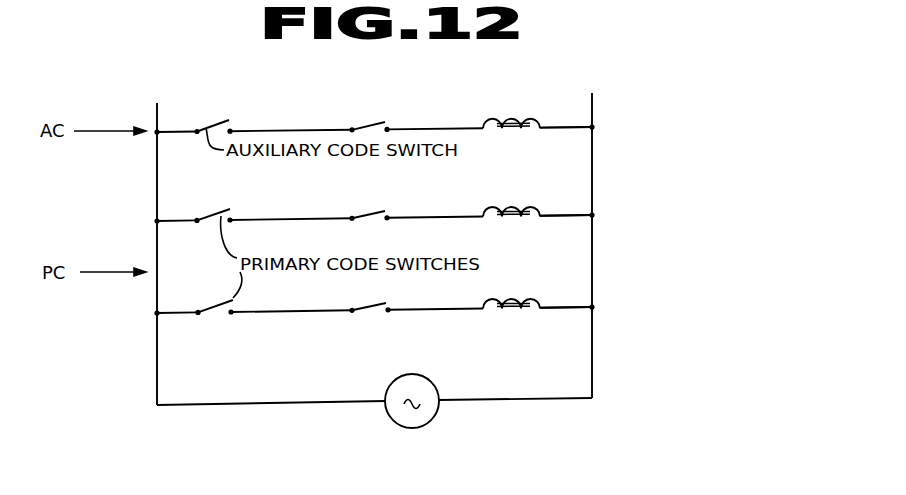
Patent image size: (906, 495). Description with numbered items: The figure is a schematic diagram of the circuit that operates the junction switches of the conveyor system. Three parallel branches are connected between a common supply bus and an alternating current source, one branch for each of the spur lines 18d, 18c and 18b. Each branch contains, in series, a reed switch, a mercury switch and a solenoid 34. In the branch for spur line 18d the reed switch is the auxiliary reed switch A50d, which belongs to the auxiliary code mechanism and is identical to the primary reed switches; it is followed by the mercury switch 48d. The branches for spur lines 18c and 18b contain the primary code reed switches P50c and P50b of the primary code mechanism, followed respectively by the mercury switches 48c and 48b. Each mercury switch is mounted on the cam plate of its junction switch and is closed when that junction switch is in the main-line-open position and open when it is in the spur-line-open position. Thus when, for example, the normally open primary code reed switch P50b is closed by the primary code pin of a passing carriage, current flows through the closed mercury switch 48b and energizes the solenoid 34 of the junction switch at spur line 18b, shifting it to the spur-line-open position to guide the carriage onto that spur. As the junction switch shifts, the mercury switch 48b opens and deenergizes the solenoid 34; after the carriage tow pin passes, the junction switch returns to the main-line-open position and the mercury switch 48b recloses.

The auxiliary reed switch A50d is at (209, 124).
The primary code reed switch P50c is at (212, 214).
The primary code reed switch P50b is at (202, 293).
The mercury switch 48d is at (375, 122).
The mercury switch 48c is at (370, 212).
The mercury switch 48b is at (364, 306).
The solenoid 34 is at (513, 116).
The spur line 18d is at (646, 126).
The spur line 18c is at (646, 216).
The spur line 18b is at (646, 307).